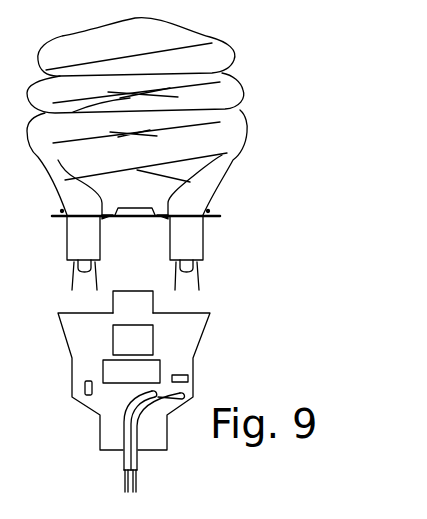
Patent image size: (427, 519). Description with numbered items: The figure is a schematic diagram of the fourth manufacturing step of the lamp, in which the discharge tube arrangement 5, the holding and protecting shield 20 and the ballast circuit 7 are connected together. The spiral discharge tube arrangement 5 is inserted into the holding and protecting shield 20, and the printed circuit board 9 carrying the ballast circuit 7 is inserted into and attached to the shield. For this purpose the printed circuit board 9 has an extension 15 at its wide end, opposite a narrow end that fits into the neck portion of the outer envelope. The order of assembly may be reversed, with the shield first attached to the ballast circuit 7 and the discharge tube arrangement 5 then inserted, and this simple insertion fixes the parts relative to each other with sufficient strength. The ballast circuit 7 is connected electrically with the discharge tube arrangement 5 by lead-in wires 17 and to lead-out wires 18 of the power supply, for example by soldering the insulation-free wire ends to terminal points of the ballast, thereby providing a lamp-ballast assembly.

The discharge tube arrangement 5 is at (222, 57).
The holding and protecting shield 20 is at (217, 211).
The lead-in wires 17 is at (72, 272).
The printed circuit board 9 is at (83, 335).
The extension 15 is at (132, 305).
The ballast circuit 7 is at (133, 340).
The lead-out wires 18 is at (127, 441).